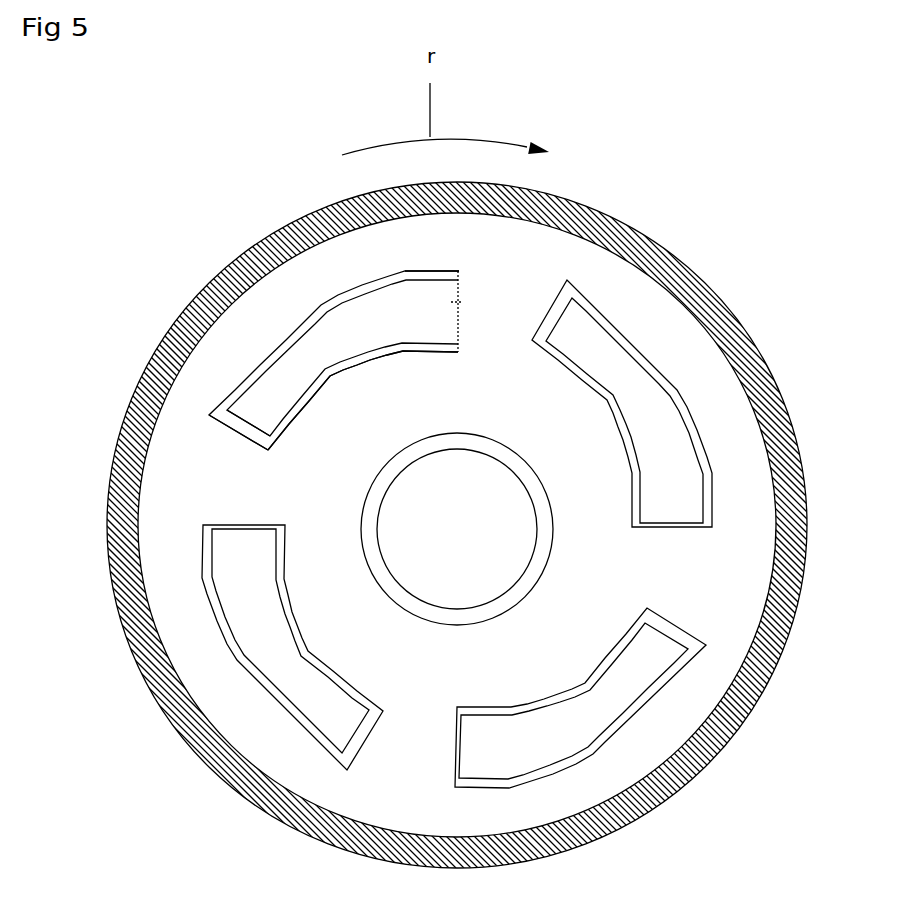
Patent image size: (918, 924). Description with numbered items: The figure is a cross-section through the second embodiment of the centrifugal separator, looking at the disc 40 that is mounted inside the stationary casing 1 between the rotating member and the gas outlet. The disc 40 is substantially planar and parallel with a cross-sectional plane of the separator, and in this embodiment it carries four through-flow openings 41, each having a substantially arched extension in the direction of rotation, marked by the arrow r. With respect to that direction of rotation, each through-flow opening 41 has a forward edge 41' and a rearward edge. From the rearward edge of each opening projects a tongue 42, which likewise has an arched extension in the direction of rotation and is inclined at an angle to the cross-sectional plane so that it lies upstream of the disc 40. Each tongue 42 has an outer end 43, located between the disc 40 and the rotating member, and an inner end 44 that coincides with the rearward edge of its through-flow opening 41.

The casing 1 is at (132, 632).
The disc 40 is at (255, 318).
The through-flow opening 41 is at (363, 400).
The forward edge 41' is at (238, 460).
The tongue 42 is at (353, 325).
The outer end 43 is at (240, 402).
The inner end 44 is at (462, 302).